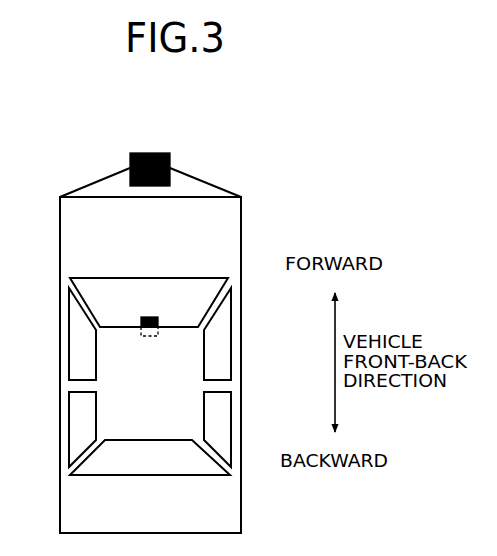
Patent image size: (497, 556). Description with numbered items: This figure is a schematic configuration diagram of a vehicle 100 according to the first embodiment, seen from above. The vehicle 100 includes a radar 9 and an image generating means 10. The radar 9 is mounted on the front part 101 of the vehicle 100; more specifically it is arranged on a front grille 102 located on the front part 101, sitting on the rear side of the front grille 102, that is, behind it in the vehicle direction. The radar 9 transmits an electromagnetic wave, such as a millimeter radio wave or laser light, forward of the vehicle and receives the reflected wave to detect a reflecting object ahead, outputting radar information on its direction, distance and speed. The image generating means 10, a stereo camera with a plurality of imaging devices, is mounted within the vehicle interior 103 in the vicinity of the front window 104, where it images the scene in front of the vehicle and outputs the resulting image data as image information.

The vehicle 100 is at (80, 147).
The radar 9 is at (152, 153).
The front part 101 is at (212, 169).
The front grille 102 is at (171, 170).
The image generating means 10 is at (152, 317).
The front window 104 is at (193, 303).
The vehicle interior 103 is at (224, 357).